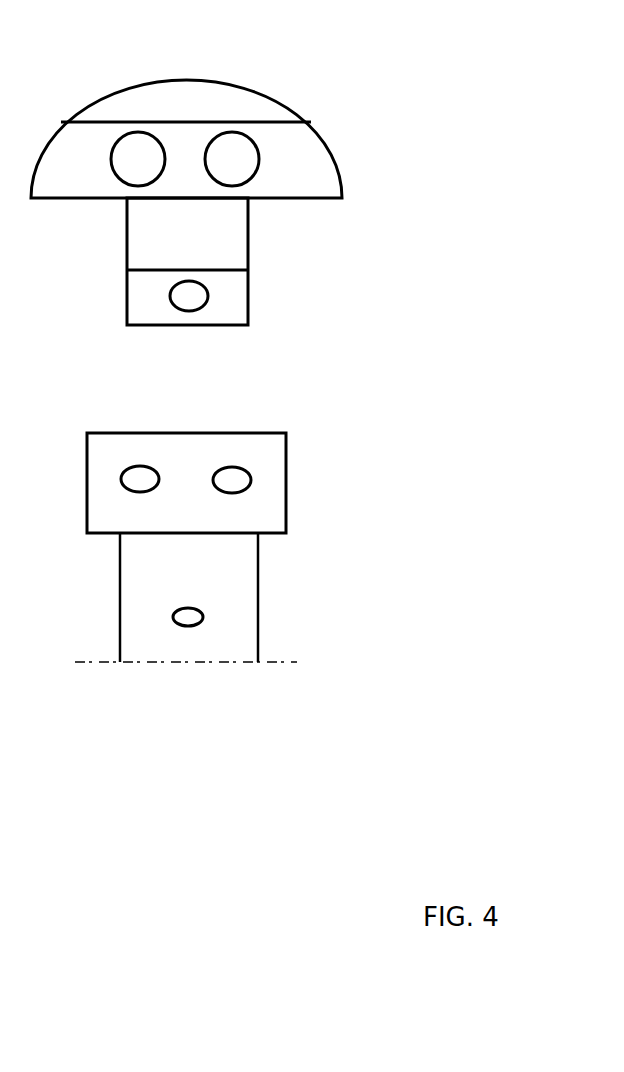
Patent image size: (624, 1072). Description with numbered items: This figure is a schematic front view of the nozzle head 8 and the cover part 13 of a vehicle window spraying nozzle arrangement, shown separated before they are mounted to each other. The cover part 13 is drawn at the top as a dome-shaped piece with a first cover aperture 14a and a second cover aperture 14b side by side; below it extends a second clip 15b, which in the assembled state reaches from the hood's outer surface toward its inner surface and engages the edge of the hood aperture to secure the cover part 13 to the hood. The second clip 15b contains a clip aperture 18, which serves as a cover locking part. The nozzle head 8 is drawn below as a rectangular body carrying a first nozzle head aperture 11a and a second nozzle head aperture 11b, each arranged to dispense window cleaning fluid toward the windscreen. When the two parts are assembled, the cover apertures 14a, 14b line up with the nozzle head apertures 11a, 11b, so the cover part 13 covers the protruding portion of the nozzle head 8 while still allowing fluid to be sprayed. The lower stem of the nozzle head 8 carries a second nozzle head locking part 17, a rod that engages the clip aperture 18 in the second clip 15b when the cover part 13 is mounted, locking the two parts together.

The cover part 13 is at (220, 107).
The first cover aperture 14a is at (138, 155).
The second cover aperture 14b is at (232, 159).
The second clip 15b is at (210, 248).
The clip aperture 18 is at (197, 293).
The nozzle head 8 is at (183, 517).
The first nozzle head aperture 11a is at (140, 475).
The second nozzle head aperture 11b is at (233, 480).
The second nozzle head locking part 17 is at (182, 617).